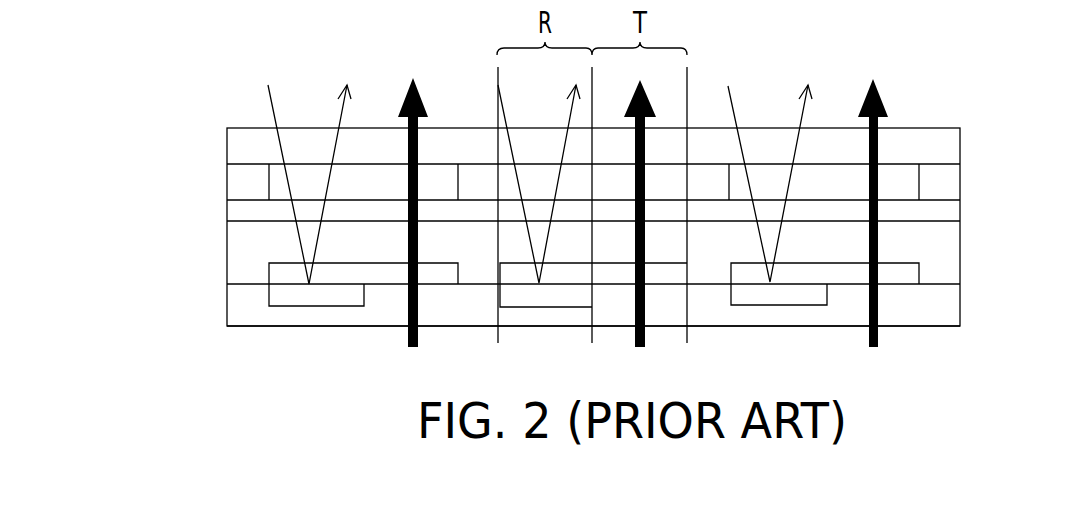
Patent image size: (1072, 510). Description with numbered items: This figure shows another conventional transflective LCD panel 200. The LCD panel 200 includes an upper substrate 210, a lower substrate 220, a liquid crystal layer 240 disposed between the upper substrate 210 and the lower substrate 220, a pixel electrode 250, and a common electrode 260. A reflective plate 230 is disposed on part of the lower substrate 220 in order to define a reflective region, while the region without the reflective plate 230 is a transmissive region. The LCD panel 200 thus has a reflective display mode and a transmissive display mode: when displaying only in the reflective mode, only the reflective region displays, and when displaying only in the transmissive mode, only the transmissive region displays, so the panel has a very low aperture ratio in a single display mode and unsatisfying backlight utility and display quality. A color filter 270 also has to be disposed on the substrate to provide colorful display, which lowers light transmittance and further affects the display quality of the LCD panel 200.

The LCD panel 200 is at (1000, 399).
The upper substrate 210 is at (923, 148).
The lower substrate 220 is at (923, 307).
The reflective plate 230 is at (782, 296).
The liquid crystal layer 240 is at (929, 244).
The pixel electrode 250 is at (903, 273).
The common electrode 260 is at (940, 210).
The color filter 270 is at (899, 184).